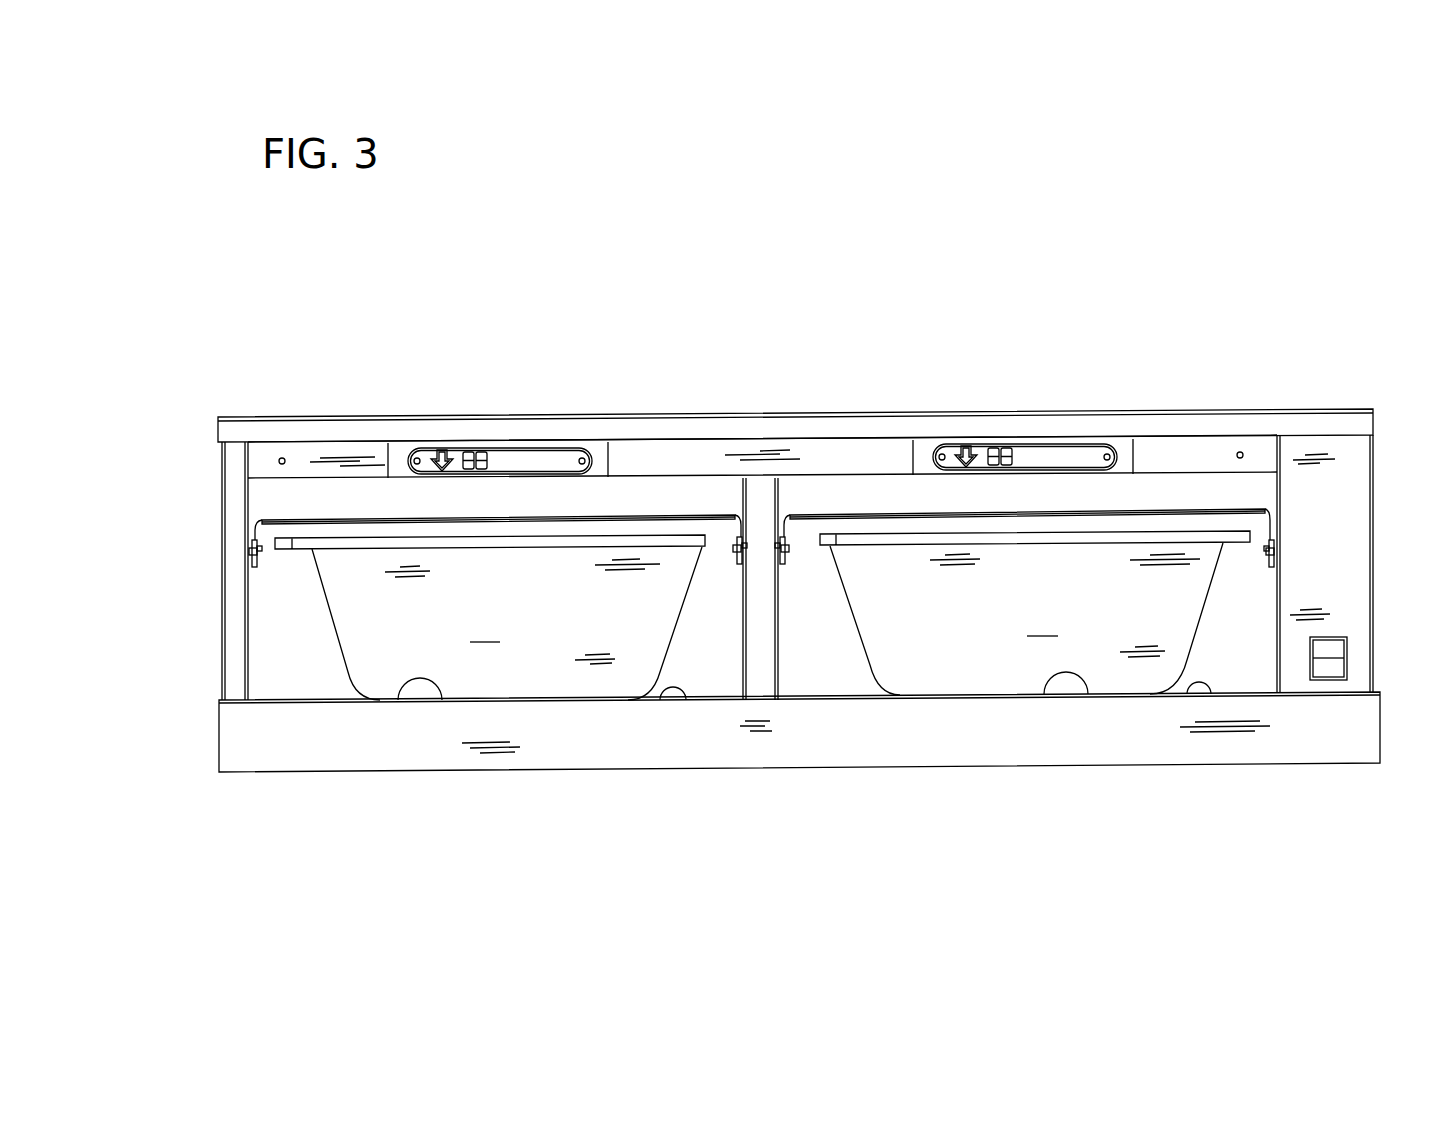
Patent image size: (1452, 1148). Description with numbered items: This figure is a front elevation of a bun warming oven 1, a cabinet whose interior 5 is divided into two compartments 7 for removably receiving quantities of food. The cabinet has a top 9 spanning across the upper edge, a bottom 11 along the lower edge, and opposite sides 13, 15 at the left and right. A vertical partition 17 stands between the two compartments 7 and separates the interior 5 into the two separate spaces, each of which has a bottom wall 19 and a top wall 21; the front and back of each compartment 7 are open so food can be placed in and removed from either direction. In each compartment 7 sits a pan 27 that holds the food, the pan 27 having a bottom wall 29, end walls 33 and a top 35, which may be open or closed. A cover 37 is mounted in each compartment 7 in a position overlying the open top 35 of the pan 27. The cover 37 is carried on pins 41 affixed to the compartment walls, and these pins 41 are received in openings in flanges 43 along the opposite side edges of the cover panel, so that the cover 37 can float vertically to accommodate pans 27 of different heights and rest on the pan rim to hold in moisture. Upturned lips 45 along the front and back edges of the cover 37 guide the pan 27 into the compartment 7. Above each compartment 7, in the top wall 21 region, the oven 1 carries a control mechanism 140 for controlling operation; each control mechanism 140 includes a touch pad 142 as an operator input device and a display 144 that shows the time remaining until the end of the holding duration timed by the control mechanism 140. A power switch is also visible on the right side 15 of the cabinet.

The oven 1 is at (1335, 312).
The interior 5 is at (512, 368).
The compartment 7 is at (290, 690).
The top 9 is at (1283, 414).
The bottom 11 is at (1274, 765).
The side 13 is at (222, 470).
The side 15 is at (1375, 562).
The vertical partition 17 is at (762, 502).
The bottom wall 19 is at (672, 705).
The top wall 21 is at (318, 486).
The pan 27 is at (372, 682).
The bottom wall 29 is at (420, 700).
The end wall 33 is at (767, 621).
The top 35 is at (352, 552).
The cover 37 is at (253, 525).
The pin 41 is at (262, 552).
The flange 43 is at (251, 560).
The upturned lip 45 is at (592, 526).
The control mechanism 140 is at (540, 452).
The touch pad 142 is at (432, 454).
The display 144 is at (466, 452).